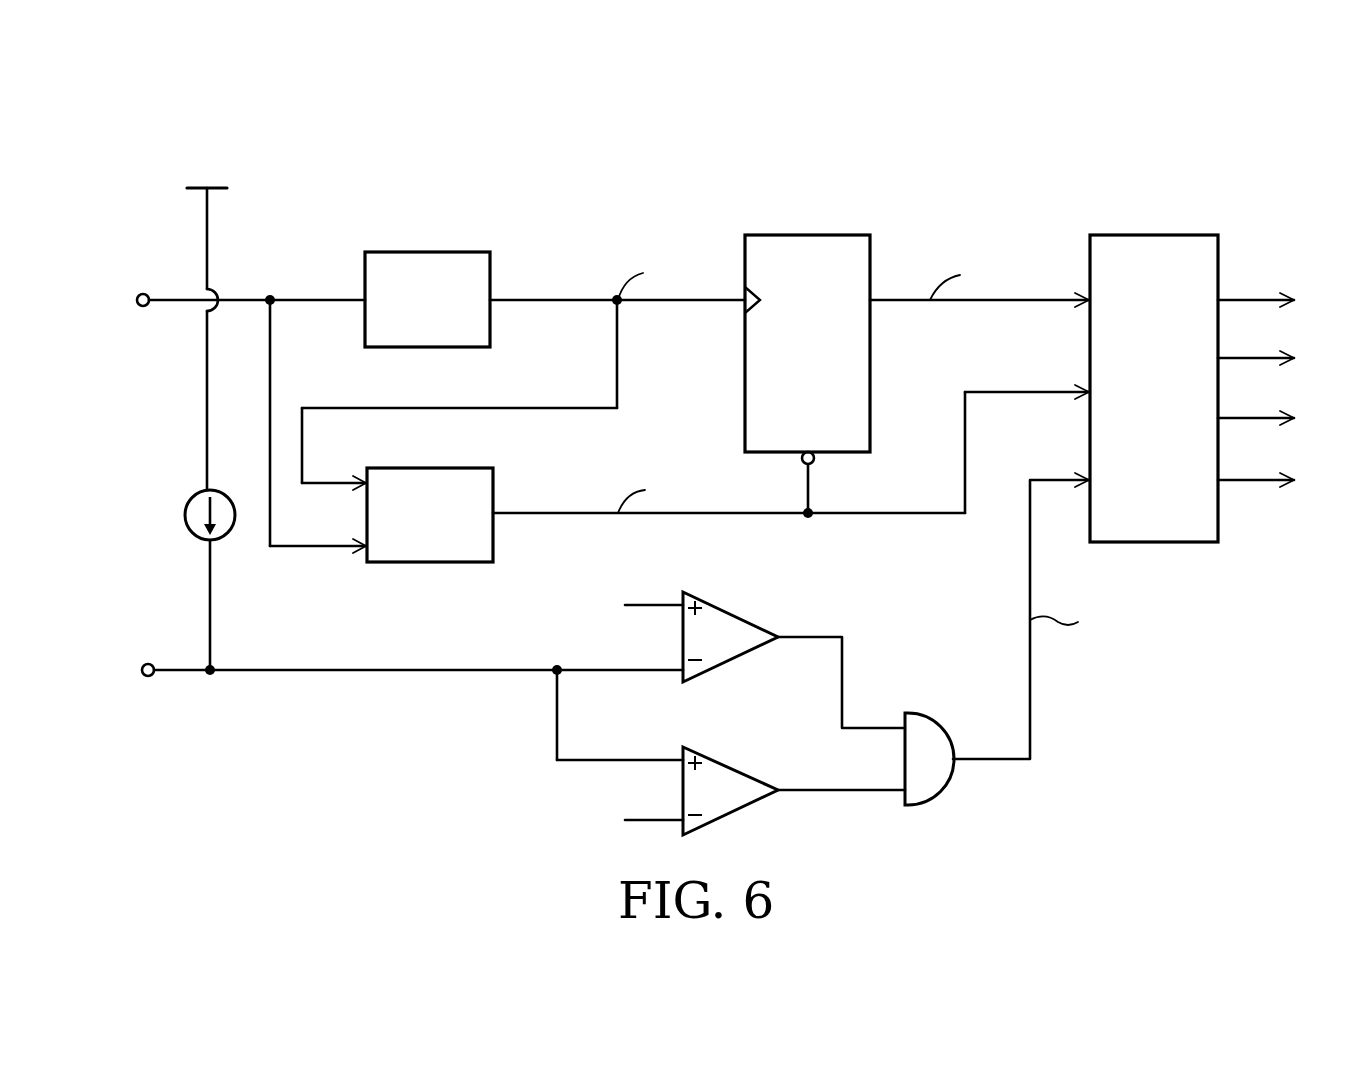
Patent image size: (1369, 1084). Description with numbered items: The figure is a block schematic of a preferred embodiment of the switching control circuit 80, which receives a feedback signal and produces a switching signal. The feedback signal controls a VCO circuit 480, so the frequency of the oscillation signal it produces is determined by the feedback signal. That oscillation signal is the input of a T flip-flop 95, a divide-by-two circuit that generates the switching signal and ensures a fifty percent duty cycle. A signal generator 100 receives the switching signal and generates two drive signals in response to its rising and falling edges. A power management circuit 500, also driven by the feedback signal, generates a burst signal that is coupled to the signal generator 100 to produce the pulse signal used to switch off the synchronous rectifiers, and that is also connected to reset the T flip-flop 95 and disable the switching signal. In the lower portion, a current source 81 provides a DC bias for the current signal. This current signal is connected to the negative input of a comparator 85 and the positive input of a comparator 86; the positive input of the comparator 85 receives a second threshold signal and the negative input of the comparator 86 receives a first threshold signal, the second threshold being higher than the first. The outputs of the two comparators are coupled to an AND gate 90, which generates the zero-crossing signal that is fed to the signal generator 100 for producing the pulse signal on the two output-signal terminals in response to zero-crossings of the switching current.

The switching control circuit 80 is at (1263, 170).
The VCO circuit 480 is at (430, 252).
The power management circuit 500 is at (432, 468).
The T flip-flop 95 is at (810, 235).
The signal generator 100 is at (1179, 404).
The current source 81 is at (185, 515).
The comparator 85 is at (735, 617).
The comparator 86 is at (735, 772).
The AND gate 90 is at (918, 713).